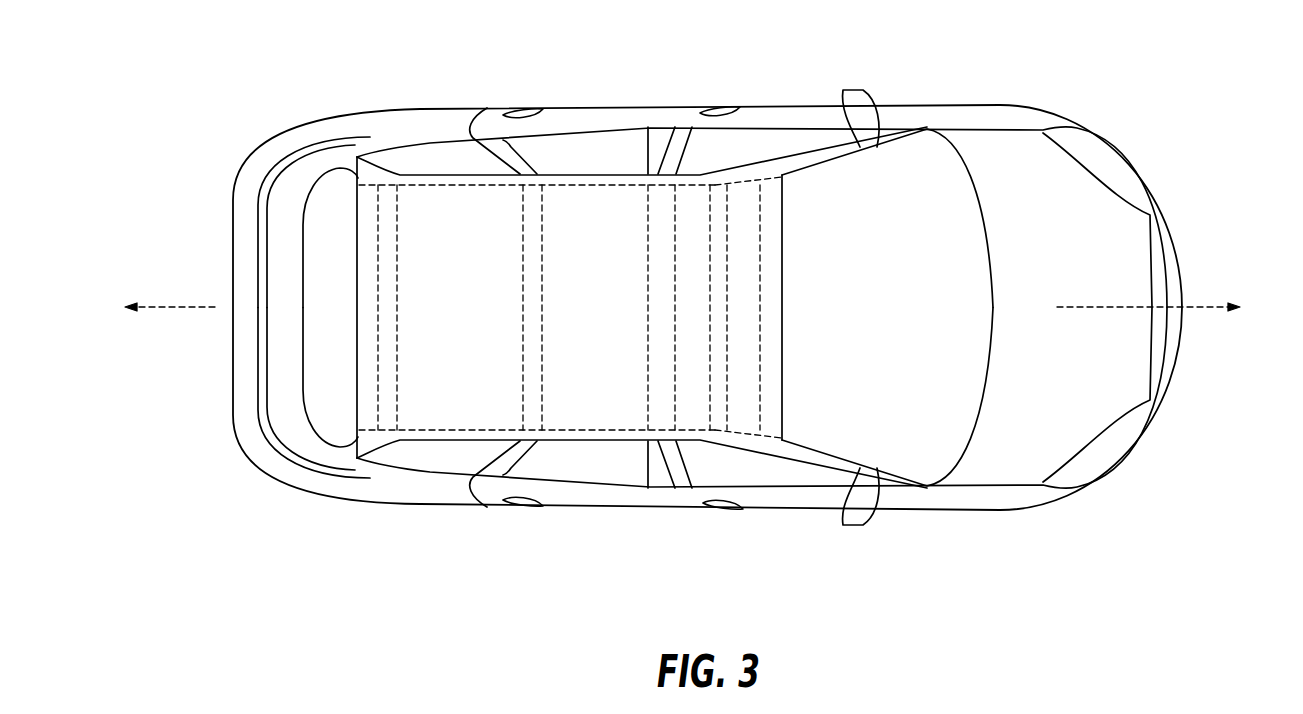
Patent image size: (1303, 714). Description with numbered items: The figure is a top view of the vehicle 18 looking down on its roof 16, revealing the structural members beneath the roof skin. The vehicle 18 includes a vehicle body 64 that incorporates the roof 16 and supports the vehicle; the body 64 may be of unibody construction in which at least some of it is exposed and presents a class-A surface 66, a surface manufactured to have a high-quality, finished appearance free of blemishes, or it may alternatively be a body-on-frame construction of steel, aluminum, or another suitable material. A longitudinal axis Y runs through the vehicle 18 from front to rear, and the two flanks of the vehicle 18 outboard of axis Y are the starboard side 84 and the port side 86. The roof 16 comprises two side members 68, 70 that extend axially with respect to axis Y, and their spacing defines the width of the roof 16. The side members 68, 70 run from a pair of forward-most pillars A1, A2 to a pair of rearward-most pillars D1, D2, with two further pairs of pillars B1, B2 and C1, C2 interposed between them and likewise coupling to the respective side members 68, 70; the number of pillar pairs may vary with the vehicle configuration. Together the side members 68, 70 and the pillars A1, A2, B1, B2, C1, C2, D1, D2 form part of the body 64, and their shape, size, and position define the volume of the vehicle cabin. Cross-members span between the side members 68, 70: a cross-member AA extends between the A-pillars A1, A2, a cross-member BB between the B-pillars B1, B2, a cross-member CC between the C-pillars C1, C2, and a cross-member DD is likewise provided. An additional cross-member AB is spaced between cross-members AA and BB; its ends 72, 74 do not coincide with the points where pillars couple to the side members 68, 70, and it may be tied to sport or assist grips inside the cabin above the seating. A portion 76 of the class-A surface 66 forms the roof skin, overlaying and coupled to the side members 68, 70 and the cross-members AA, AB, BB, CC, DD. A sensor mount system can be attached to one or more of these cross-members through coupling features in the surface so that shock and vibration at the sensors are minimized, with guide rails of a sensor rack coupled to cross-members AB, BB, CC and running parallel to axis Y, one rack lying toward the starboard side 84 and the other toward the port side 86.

The vehicle 18 is at (1020, 100).
The vehicle roof 16 is at (573, 444).
The class-A surface 66 is at (775, 118).
The starboard side 84 is at (785, 516).
The port side 86 is at (563, 99).
The vehicle body 64 is at (886, 150).
The side member 68 is at (583, 179).
The side member 70 is at (603, 437).
The end of cross-member AB 72 is at (722, 187).
The end of cross-member AB 74 is at (722, 432).
The portion of surface 76 is at (450, 390).
The forward-most pillar A1 is at (842, 157).
The forward-most pillar A2 is at (842, 464).
The B-pillar B1 is at (657, 140).
The B-pillar B2 is at (658, 478).
The C-pillar C1 is at (503, 152).
The C-pillar C2 is at (498, 468).
The rearward-most pillar D1 is at (353, 170).
The rearward-most pillar D2 is at (353, 447).
The cross-member AA is at (773, 265).
The cross-member AB is at (723, 317).
The cross-member BB is at (660, 327).
The cross-member CC is at (527, 280).
The cross-member DD is at (383, 246).
The longitudinal axis Y is at (695, 309).